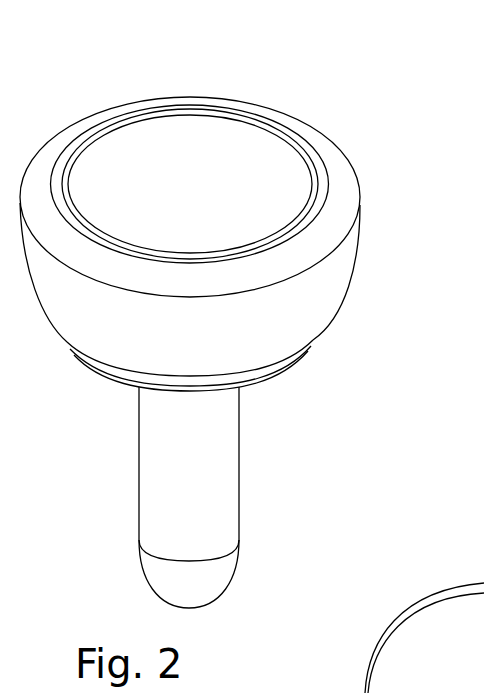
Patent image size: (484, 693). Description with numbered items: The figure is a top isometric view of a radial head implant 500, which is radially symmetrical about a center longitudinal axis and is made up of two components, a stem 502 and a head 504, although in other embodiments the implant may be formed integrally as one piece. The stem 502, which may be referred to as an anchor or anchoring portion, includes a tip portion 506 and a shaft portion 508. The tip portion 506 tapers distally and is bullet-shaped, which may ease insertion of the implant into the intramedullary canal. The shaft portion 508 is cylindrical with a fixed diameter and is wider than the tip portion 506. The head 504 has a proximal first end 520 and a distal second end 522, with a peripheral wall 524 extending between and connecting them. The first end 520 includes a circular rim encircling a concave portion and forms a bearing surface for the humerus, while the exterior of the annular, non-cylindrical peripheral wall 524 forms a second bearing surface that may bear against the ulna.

The radial head implant 500 is at (250, 309).
The stem 502 is at (212, 497).
The head 504 is at (250, 220).
The tip portion 506 is at (148, 578).
The shaft portion 508 is at (139, 450).
The first end 520 is at (223, 106).
The second end 522 is at (268, 378).
The peripheral wall 524 is at (323, 277).